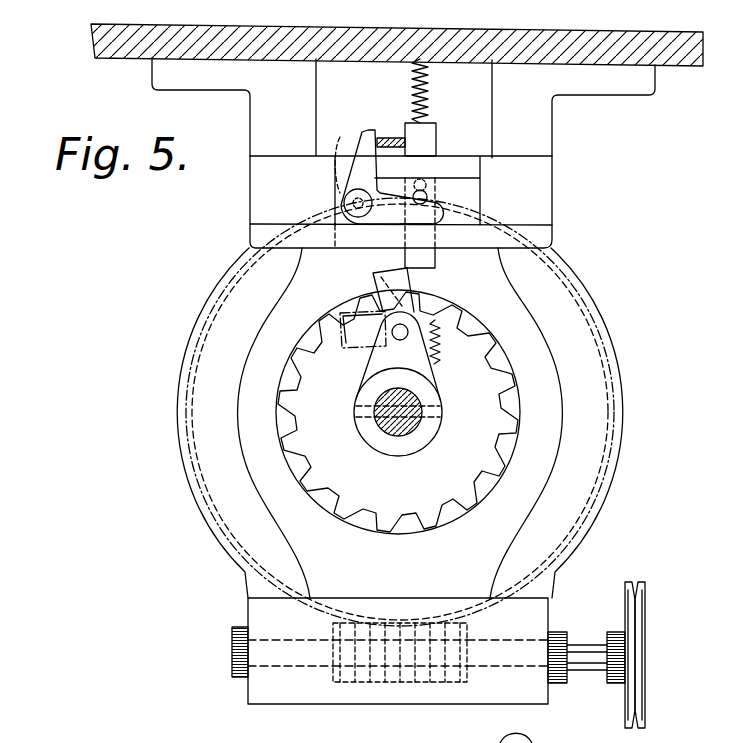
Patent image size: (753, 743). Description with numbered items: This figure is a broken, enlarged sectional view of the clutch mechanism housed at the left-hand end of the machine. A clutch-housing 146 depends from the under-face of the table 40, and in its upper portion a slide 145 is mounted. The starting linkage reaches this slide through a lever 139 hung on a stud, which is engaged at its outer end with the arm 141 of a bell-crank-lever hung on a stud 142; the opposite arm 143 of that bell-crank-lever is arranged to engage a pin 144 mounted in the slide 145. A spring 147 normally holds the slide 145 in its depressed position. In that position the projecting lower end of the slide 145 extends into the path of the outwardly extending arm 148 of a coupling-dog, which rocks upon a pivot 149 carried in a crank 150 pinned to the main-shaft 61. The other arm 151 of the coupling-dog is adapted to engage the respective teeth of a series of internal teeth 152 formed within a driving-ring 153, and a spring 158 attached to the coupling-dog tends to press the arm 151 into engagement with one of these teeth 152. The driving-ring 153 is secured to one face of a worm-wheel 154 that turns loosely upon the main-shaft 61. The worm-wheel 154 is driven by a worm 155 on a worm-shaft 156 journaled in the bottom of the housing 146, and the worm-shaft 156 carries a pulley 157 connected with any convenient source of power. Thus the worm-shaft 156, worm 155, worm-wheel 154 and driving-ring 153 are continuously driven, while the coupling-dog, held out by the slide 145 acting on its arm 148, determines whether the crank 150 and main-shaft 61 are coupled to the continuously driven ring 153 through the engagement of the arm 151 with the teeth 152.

The table 40 is at (624, 13).
The main-shaft 61 is at (396, 435).
The lever 139 is at (388, 137).
The arm of bell-crank-lever 141 is at (368, 128).
The stud 142 is at (357, 209).
The opposite arm of bell-crank-lever 143 is at (393, 219).
The pin 144 is at (428, 197).
The slide 145 is at (437, 148).
The clutch-housing 146 is at (177, 388).
The spring 147 is at (433, 106).
The arm of coupling-dog 148 is at (400, 282).
The pivot 149 is at (408, 328).
The crank 150 is at (375, 368).
The arm of coupling-dog 151 is at (352, 352).
The internal teeth 152 is at (300, 413).
The driving-ring 153 is at (512, 458).
The worm-wheel 154 is at (570, 557).
The worm 155 is at (343, 682).
The worm-shaft 156 is at (295, 668).
The pulley 157 is at (646, 698).
The spring 158 is at (440, 362).